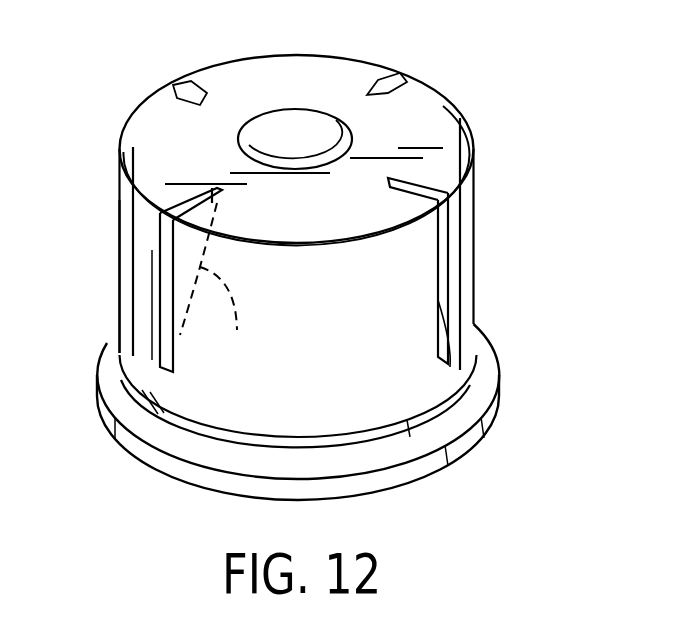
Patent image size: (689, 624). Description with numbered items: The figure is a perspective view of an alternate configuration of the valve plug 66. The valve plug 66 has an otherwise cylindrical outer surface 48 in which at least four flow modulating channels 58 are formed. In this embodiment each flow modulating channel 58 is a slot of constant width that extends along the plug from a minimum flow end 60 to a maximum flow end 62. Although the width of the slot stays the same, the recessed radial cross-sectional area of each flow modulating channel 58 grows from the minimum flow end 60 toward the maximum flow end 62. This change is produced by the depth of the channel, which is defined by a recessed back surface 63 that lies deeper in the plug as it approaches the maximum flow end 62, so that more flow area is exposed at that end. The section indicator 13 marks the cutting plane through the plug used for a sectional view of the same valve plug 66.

The section line 13- 13 is at (247, 143).
The cylindrical outer surface 48 is at (118, 285).
The flow modulating channel 58 is at (425, 281).
The minimum flow end 60 is at (483, 402).
The maximum flow end 62 is at (372, 160).
The recessed back surface 63 is at (220, 290).
The valve plug 66 is at (543, 191).